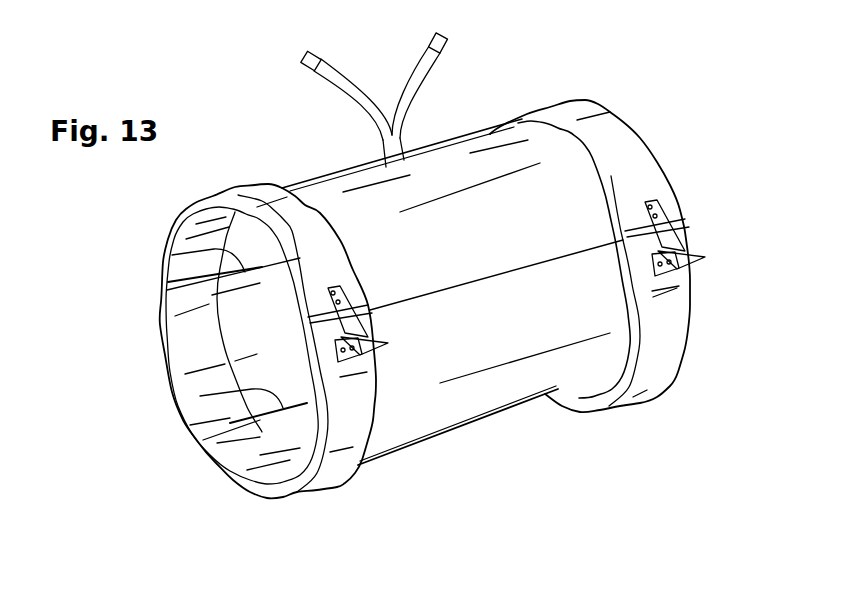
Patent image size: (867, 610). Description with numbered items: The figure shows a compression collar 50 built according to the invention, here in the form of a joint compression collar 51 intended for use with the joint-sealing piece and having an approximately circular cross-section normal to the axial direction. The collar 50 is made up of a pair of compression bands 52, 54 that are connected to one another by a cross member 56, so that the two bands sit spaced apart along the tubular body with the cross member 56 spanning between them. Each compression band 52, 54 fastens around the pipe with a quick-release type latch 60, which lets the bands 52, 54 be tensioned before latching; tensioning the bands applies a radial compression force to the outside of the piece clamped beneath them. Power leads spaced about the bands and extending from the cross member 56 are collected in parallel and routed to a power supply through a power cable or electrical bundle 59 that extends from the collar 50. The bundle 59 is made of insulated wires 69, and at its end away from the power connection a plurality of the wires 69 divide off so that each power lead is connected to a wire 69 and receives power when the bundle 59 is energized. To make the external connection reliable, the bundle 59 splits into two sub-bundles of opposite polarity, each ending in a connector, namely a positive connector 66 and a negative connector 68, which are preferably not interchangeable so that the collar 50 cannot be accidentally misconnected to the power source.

The compression collar 50 is at (420, 446).
The joint compression collar 51 is at (503, 420).
The compression band 52 is at (217, 468).
The compression band 54 is at (672, 315).
The cross member 56 is at (530, 210).
The power cable (electrical bundle) 59 is at (380, 145).
The quick-release latch 60 is at (700, 250).
The positive connector 66 is at (302, 60).
The negative connector 68 is at (448, 43).
The insulated wire 69 is at (168, 258).